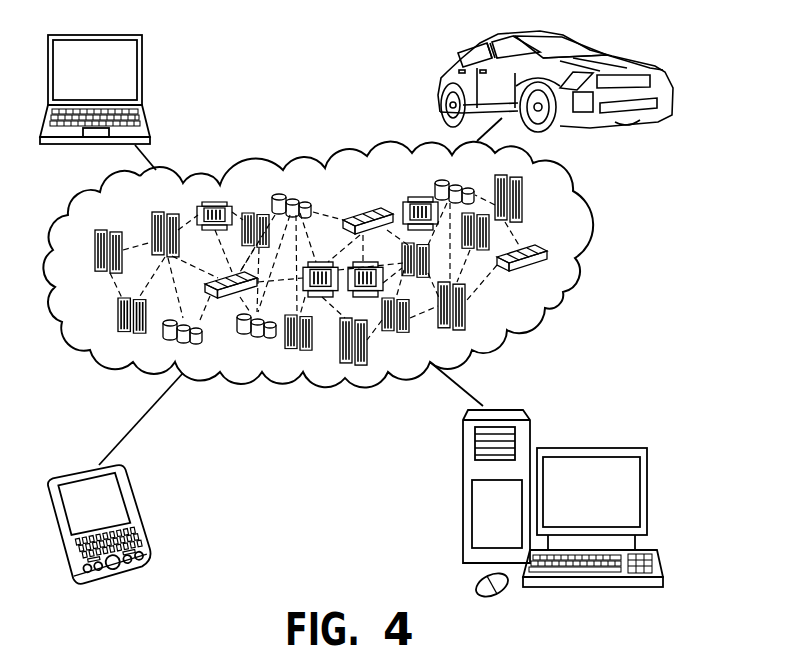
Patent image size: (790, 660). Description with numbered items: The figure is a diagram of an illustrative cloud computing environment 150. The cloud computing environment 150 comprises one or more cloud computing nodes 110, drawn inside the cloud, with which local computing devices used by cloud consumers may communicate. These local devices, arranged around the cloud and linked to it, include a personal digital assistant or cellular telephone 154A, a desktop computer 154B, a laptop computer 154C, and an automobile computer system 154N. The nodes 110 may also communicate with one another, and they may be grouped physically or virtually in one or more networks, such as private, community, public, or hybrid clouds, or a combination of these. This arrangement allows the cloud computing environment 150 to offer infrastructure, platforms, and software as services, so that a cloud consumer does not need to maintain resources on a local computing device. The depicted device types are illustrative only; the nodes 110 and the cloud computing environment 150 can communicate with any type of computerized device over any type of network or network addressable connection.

The cloud computing nodes 110 is at (581, 305).
The cloud computing environment 150 is at (590, 257).
The personal digital assistant (PDA) or cellular telephone 154A is at (140, 513).
The desktop computer 154B is at (647, 476).
The laptop computer 154C is at (142, 80).
The automobile computer system 154N is at (438, 82).